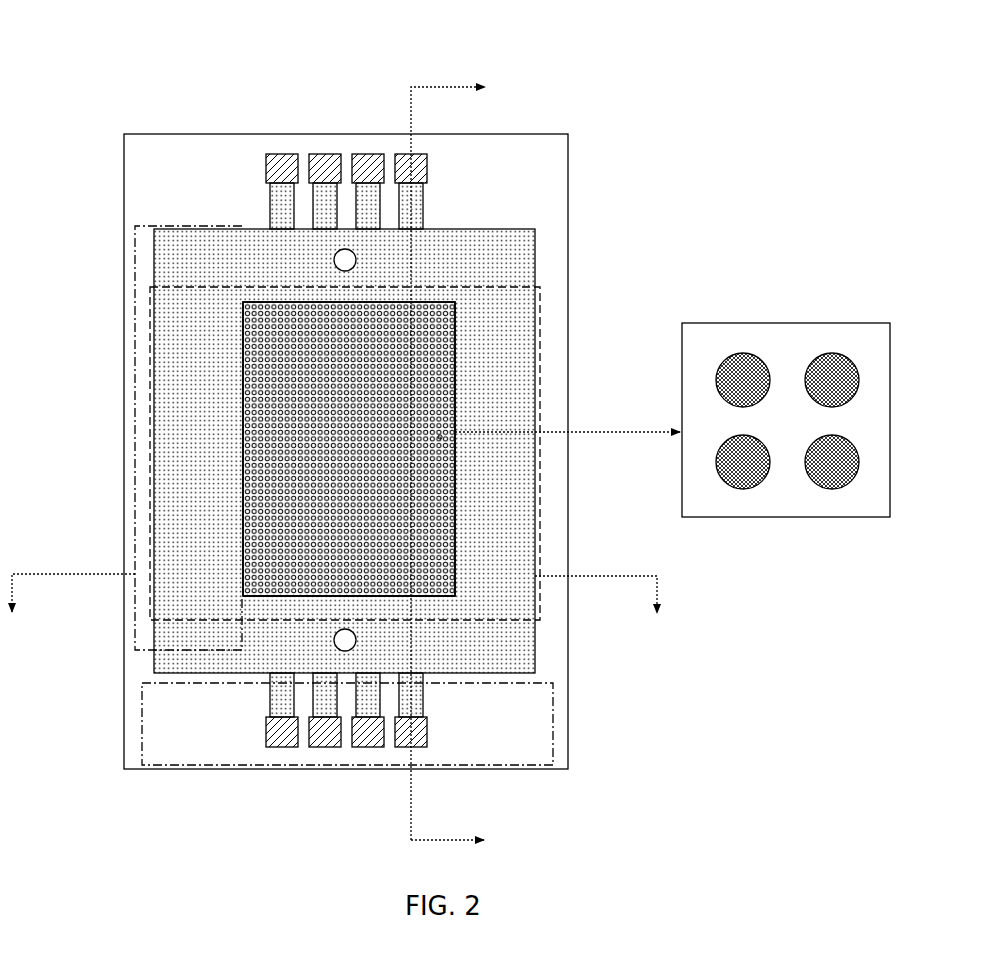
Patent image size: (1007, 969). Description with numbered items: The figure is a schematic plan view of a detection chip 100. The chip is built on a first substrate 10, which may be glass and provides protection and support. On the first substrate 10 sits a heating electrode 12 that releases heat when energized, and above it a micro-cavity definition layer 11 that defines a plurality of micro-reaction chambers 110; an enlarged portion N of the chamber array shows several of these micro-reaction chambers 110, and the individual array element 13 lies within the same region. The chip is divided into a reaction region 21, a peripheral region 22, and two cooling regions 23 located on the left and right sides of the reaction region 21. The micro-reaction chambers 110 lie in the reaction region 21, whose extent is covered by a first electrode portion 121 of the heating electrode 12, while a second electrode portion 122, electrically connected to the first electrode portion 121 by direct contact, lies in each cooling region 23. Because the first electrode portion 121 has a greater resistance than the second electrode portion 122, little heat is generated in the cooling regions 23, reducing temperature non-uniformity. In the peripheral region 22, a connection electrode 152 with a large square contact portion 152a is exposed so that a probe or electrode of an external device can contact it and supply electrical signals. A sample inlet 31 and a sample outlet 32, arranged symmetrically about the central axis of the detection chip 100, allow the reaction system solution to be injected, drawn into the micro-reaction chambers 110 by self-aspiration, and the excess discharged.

The detection chip 100 is at (818, 36).
The first substrate 10 is at (568, 217).
The heating electrode 12 is at (513, 257).
The micro-cavity definition layer 11 is at (455, 386).
The reaction region 21 is at (455, 484).
The pixel 13 is at (433, 434).
The second electrode portion 122 is at (150, 530).
The first electrode portion 121 is at (278, 605).
The cooling region 23 is at (135, 634).
The peripheral region 22 is at (553, 733).
The connection electrode 152 is at (285, 208).
The contact portion 152a is at (273, 170).
The sample inlet 31 is at (339, 257).
The sample outlet 32 is at (341, 642).
The micro-reaction chamber 110 is at (828, 372).
The enlarged region N is at (704, 520).